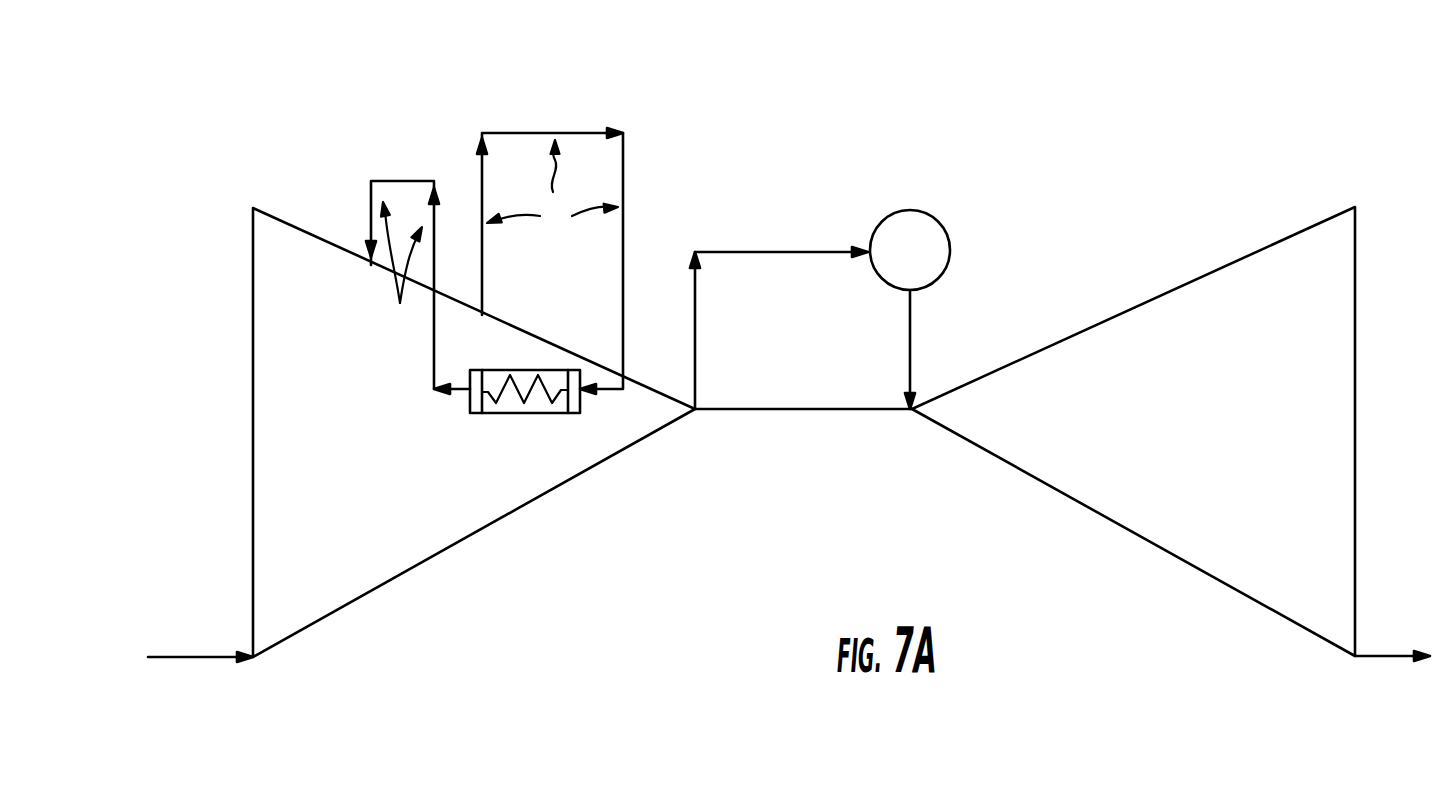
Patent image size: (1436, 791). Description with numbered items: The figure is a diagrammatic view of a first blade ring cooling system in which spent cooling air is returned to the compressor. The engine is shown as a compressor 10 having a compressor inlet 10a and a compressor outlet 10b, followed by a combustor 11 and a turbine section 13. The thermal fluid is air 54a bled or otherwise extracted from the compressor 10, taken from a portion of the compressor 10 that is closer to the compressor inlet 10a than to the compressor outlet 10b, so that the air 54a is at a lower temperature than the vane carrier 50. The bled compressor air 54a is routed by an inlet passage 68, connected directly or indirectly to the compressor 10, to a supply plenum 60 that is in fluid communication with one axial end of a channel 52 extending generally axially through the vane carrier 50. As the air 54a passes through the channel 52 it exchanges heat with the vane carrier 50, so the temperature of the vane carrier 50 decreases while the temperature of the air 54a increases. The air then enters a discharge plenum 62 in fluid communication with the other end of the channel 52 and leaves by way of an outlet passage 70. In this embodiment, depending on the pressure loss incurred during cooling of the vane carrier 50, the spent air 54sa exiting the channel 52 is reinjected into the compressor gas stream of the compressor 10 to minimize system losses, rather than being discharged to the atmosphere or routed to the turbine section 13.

The compressor 10 is at (285, 610).
The compressor inlet 10a is at (253, 393).
The compressor outlet 10b is at (697, 410).
The combustor 11 is at (915, 245).
The turbine section 13 is at (1305, 597).
The vane carrier 50 is at (502, 415).
The channel 52 is at (538, 407).
The air 54a is at (480, 183).
The spent air 54sa is at (371, 213).
The supply plenum 60 is at (582, 400).
The discharge plenum 62 is at (465, 400).
The inlet passage 68 is at (551, 189).
The outlet passage 70 is at (402, 271).